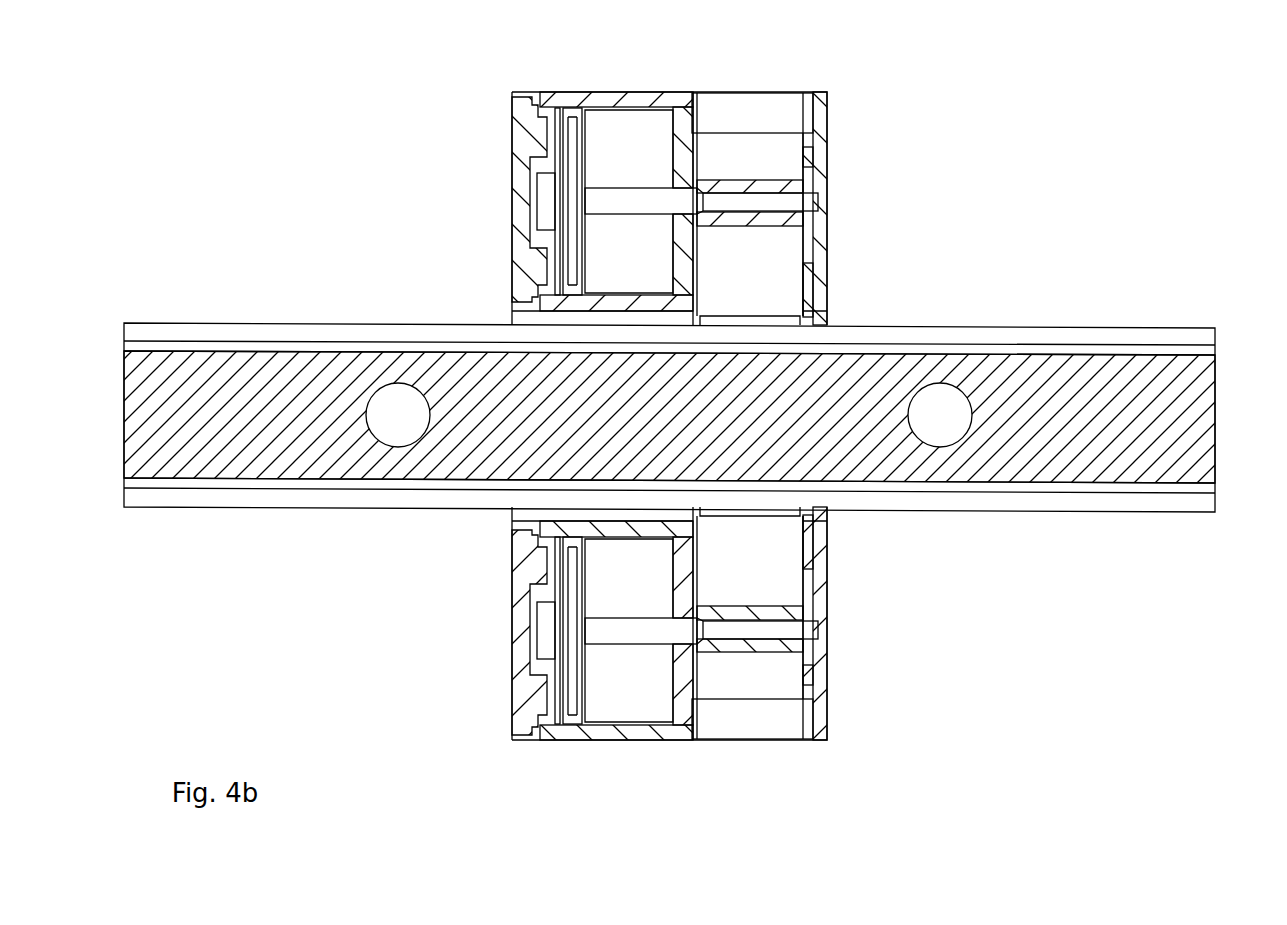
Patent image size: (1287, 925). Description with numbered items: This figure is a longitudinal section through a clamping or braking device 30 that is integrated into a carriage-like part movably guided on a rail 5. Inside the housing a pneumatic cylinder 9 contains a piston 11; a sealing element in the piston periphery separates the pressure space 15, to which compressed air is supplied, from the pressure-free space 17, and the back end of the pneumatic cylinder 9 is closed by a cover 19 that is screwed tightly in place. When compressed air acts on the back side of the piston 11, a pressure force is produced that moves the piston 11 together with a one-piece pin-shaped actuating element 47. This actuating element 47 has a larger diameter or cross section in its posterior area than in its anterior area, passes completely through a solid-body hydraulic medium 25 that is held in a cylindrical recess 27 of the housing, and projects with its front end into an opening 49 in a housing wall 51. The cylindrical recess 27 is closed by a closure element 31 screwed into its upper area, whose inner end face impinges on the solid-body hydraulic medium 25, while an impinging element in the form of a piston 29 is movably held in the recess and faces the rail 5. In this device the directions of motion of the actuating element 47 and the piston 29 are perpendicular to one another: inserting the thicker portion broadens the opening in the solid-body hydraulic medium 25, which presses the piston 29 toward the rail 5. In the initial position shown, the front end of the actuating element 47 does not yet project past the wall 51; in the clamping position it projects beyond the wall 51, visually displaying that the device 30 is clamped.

The rail 5 is at (1218, 462).
The pneumatic cylinder 9 is at (503, 134).
The piston 11 is at (575, 148).
The pressure space 15 is at (553, 113).
The pressure-free space 17 is at (652, 174).
The cover 19 is at (520, 263).
The solid-body hydraulic medium 25 is at (797, 185).
The cylindrical recess 27 is at (800, 256).
The piston 29 is at (782, 290).
The clamping or braking device 30 is at (801, 81).
The closure element 31 is at (740, 105).
The pin-shaped actuating element 47 is at (621, 211).
The opening 49 is at (828, 200).
The housing wall 51 is at (820, 268).